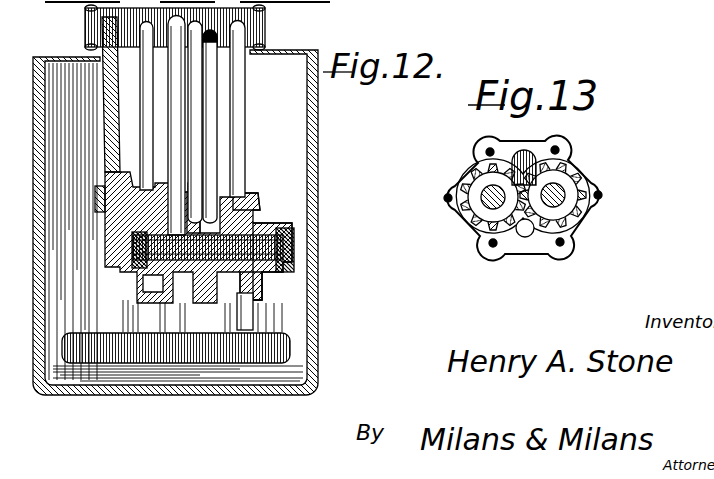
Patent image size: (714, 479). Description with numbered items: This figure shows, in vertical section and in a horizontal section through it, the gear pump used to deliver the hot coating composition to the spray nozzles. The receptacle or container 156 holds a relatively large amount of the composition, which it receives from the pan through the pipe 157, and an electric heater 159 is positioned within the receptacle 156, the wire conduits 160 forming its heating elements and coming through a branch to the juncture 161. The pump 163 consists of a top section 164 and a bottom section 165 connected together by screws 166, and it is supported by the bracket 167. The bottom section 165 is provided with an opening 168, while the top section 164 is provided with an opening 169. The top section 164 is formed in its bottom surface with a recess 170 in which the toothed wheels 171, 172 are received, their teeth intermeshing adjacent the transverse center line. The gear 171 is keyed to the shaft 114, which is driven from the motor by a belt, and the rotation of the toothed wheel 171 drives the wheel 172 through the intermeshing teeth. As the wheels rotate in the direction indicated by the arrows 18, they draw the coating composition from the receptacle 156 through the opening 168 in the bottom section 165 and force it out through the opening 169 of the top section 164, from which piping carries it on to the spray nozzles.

In FIG. 12, the receptacle or container 156 is at (320, 160).
In FIG. 12, the pipe 157 is at (205, 135).
In FIG. 12, the electric heater 159 is at (112, 348).
In FIG. 12, the wire conduits 160 is at (142, 115).
In FIG. 12, the juncture 161 is at (266, 27).
In FIG. 12, the pump 163 is at (293, 226).
In FIG. 12, the top section 164 is at (262, 208).
In FIG. 13, the top section 164 is at (460, 170).
In FIG. 12, the bottom section 165 is at (258, 316).
In FIG. 12, the screws 166 is at (262, 223).
In FIG. 12, the bracket 167 is at (107, 147).
In FIG. 13, the opening 168 is at (538, 142).
In FIG. 13, the opening 169 is at (527, 234).
In FIG. 12, the recess 170 is at (252, 186).
In FIG. 13, the recess 170 is at (578, 215).
In FIG. 12, the toothed wheel 171 is at (150, 235).
In FIG. 13, the toothed wheel 171 is at (490, 214).
In FIG. 12, the toothed wheel 172 is at (398, 238).
In FIG. 13, the toothed wheel 172 is at (567, 192).
In FIG. 12, the shaft 114 is at (175, 96).
In FIG. 13, the shaft 114 is at (490, 199).
In FIG. 12, the flow direction arrow 18 is at (127, 258).